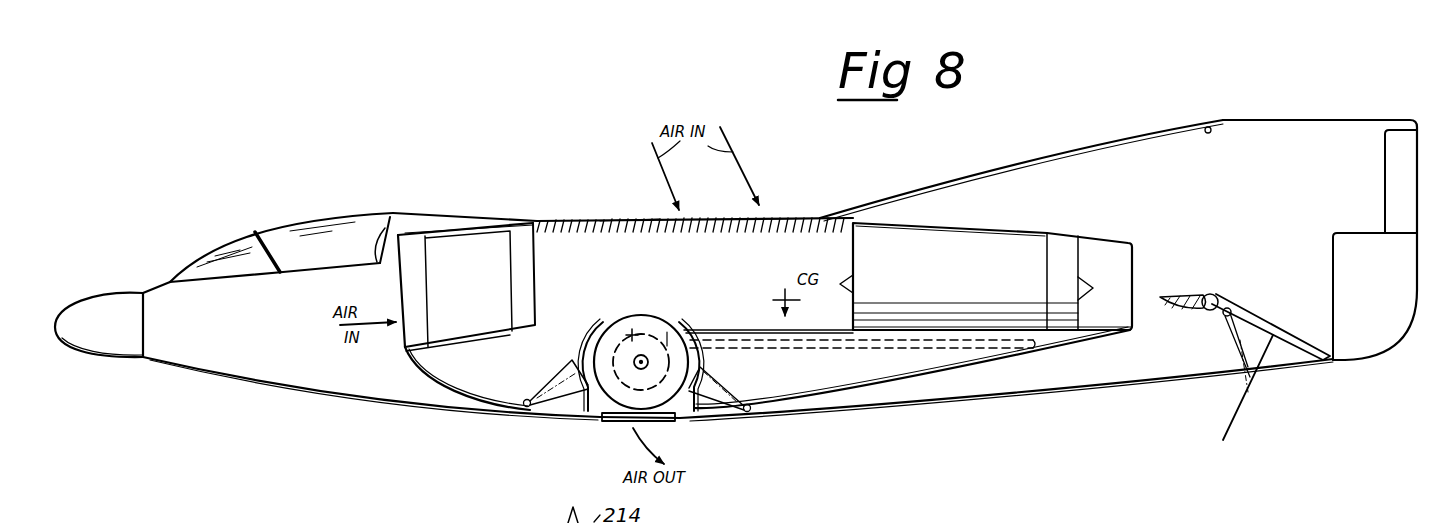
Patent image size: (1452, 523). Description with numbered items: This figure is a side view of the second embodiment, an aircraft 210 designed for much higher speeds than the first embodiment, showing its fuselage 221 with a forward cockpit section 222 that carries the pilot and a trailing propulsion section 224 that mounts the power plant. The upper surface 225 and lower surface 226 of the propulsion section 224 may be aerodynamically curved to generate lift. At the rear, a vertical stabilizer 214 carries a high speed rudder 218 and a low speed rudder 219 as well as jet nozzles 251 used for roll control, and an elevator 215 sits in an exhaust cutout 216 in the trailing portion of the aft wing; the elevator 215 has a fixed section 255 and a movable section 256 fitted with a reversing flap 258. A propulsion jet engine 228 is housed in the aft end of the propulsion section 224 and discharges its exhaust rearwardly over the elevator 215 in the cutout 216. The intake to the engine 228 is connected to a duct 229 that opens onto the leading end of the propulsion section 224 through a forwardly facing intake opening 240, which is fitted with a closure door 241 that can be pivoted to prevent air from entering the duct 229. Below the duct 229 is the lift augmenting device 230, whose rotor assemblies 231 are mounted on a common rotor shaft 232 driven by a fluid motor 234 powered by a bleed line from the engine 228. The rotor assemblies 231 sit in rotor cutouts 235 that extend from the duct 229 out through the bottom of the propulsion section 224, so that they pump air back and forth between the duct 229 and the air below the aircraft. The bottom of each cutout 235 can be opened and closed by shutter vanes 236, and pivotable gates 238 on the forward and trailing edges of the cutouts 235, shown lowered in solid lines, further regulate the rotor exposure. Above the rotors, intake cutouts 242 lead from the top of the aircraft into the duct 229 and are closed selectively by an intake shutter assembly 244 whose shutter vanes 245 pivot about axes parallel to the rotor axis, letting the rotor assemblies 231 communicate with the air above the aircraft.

The aircraft 210 is at (432, 188).
The vertical stabilizer 214 is at (1328, 104).
The elevators 215 is at (1219, 296).
The exhaust cutouts 216 is at (1240, 333).
The high speed rudder 218 is at (1384, 157).
The low speed rudder 219 is at (1366, 237).
The fuselage 221 is at (403, 411).
The forward cockpit section 222 is at (298, 380).
The propulsion section 224 is at (885, 218).
The upper surface 225 is at (506, 219).
The lower surface 226 is at (493, 402).
The propulsion jet engines 228 is at (993, 244).
The ducts 229 is at (630, 260).
The lift augmenting device 230 is at (647, 338).
The rotor assemblies 231 is at (668, 324).
The rotor shaft 232 is at (648, 361).
The fluid motor 234 is at (655, 300).
The rotor cutouts 235 is at (613, 320).
The shutter vanes 236 is at (655, 420).
The pivotable gates 238 is at (582, 408).
The intake openings 240 is at (403, 292).
The closure doors 241 is at (481, 299).
The intake cutouts 242 is at (808, 200).
The intake shutter assemblies 244 is at (739, 217).
The shutter vanes 245 is at (657, 217).
The jet nozzles 251 is at (1227, 104).
The fixed section 255 is at (1171, 296).
The movable section 256 is at (1300, 306).
The reversing flaps 258 is at (1250, 325).